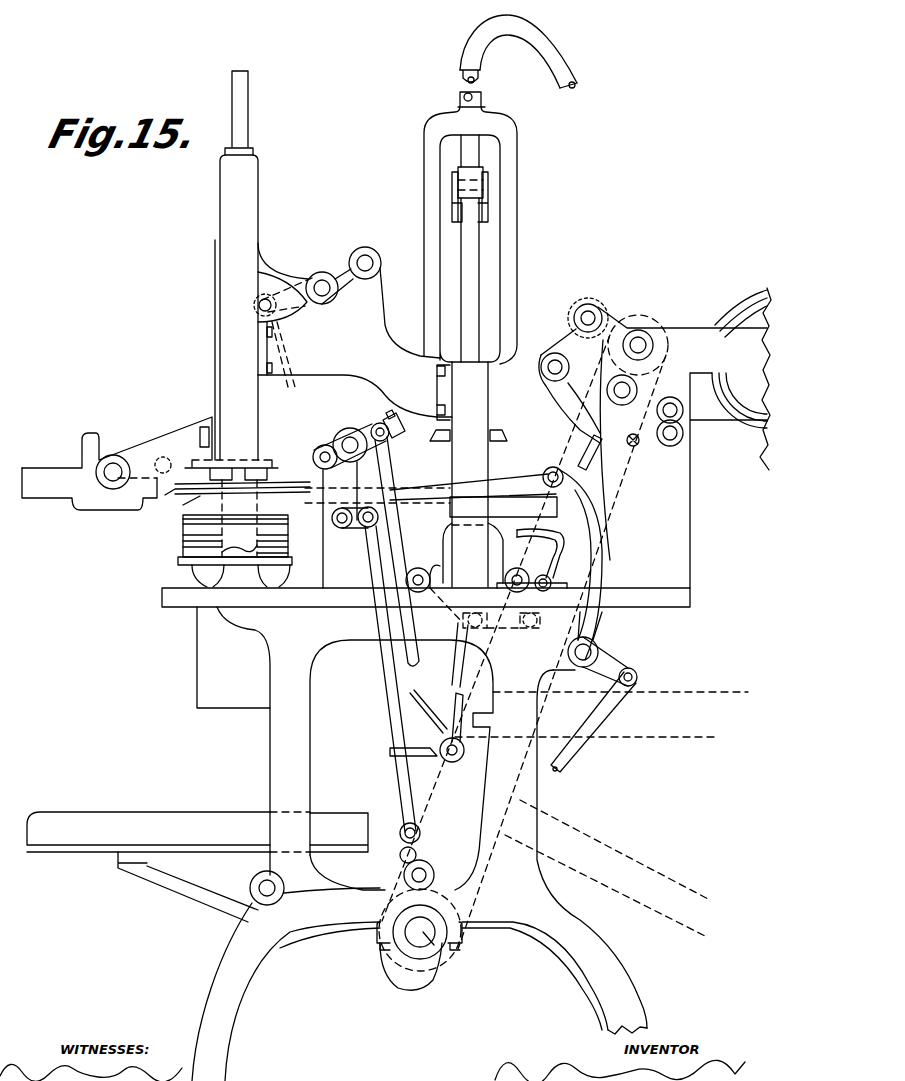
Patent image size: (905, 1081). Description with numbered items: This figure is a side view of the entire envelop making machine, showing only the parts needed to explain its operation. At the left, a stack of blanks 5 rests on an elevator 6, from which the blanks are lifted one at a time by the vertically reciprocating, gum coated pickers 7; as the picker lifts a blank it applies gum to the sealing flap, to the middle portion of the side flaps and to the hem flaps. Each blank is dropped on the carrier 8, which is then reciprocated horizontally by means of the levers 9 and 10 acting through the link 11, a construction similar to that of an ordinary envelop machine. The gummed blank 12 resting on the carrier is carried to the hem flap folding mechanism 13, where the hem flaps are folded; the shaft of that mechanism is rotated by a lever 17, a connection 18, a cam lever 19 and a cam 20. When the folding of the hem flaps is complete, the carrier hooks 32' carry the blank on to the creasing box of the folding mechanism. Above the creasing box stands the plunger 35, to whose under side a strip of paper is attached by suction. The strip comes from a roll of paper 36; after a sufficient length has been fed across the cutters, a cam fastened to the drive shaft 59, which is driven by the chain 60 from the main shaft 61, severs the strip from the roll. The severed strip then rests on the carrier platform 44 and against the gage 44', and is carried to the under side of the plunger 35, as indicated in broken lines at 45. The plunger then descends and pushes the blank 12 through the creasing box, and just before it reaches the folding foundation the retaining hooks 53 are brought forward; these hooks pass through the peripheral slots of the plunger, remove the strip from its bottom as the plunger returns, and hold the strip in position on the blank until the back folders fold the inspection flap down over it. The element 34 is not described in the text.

The stack of blanks 5 is at (183, 535).
The elevator 6 is at (180, 568).
The gum coated pickers 7 is at (266, 486).
The carrier 8 is at (300, 497).
The lever 9 is at (581, 565).
The lever 10 is at (600, 657).
The link 11 is at (508, 484).
The gummed blank 12 is at (184, 508).
The hem flap folding mechanism 13 is at (362, 471).
The lever 17 is at (359, 528).
The connection 18 is at (387, 671).
The cam lever 19 is at (376, 832).
The cam 20 is at (445, 903).
The carrier hooks 32' is at (321, 448).
The needle bar housing 34 is at (487, 270).
The plunger 35 is at (467, 474).
The roll of paper 36 is at (732, 322).
The carrier platform 44 is at (629, 461).
The gage 44' is at (566, 455).
The strip position 45 is at (556, 405).
The retaining hooks 53 is at (551, 540).
The drive shaft 59 is at (650, 347).
The chain 60 is at (513, 787).
The main shaft 61 is at (437, 958).